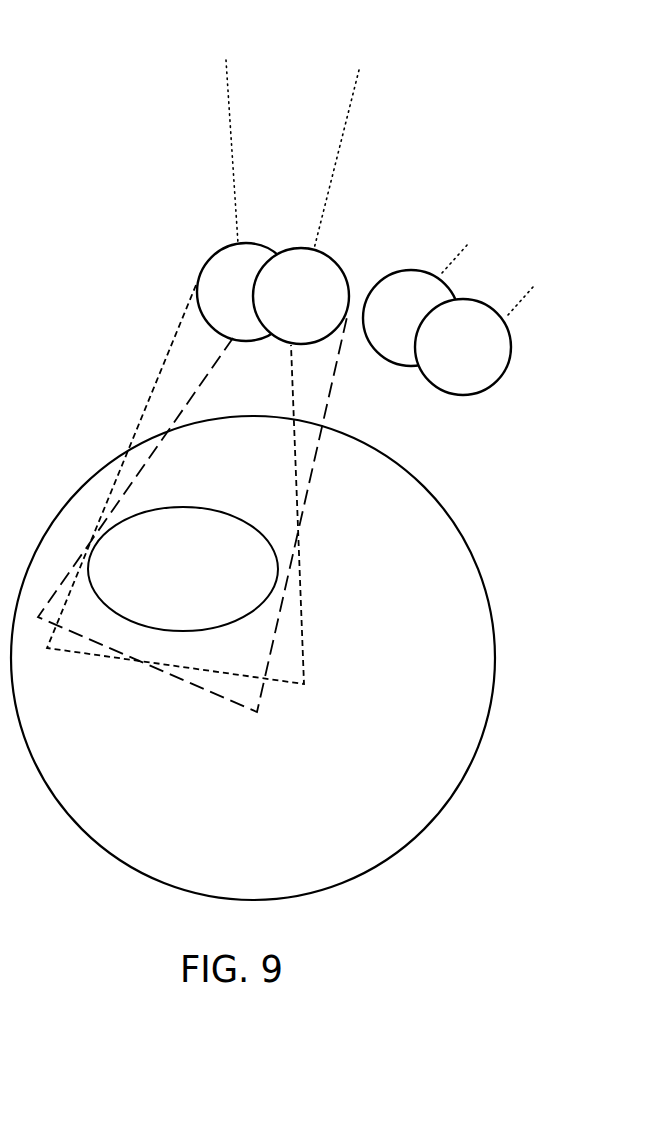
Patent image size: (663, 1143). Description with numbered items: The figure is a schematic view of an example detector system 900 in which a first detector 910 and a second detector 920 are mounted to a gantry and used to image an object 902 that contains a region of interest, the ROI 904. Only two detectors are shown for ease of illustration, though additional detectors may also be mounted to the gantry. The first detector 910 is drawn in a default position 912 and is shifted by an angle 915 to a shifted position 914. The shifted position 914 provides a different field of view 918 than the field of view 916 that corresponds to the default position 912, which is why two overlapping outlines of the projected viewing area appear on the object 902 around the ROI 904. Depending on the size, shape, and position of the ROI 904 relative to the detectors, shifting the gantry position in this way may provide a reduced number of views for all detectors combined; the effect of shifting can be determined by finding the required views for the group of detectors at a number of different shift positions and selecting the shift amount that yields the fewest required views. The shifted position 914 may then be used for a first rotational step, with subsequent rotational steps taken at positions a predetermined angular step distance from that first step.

The detector system 900 is at (474, 66).
The object 902 is at (494, 658).
The ROI 904 is at (113, 616).
The first detector 910 is at (202, 270).
The default position 912 is at (274, 257).
The shifted position 914 is at (345, 245).
The angle 915 is at (349, 102).
The field of view 916 is at (303, 637).
The field of view 918 is at (198, 688).
The second detector 920 is at (455, 288).